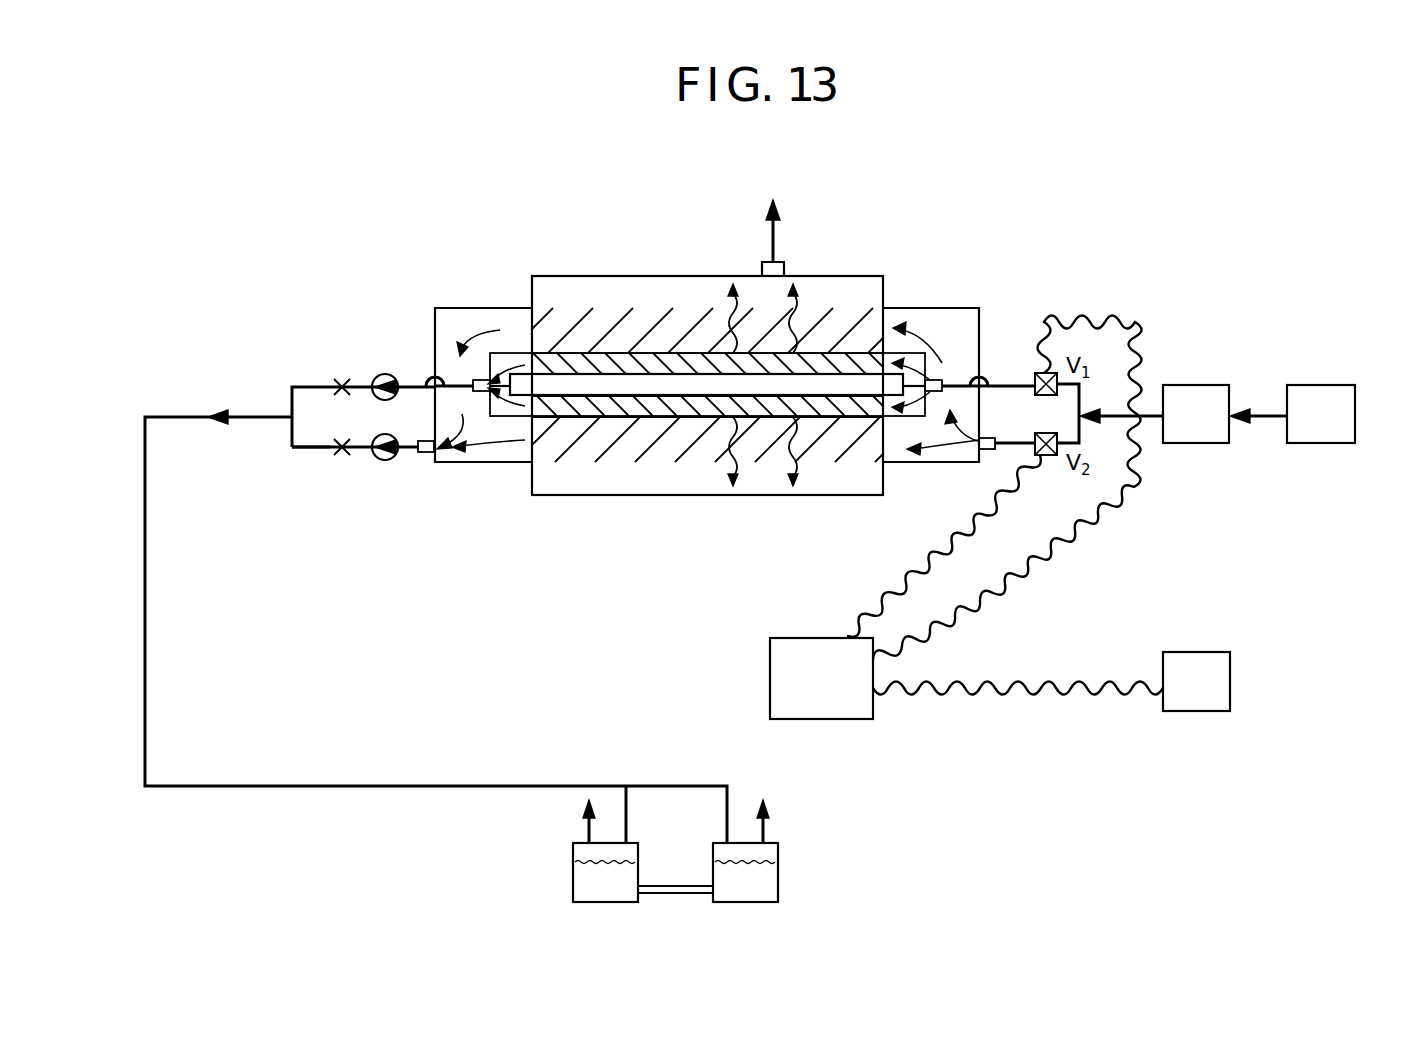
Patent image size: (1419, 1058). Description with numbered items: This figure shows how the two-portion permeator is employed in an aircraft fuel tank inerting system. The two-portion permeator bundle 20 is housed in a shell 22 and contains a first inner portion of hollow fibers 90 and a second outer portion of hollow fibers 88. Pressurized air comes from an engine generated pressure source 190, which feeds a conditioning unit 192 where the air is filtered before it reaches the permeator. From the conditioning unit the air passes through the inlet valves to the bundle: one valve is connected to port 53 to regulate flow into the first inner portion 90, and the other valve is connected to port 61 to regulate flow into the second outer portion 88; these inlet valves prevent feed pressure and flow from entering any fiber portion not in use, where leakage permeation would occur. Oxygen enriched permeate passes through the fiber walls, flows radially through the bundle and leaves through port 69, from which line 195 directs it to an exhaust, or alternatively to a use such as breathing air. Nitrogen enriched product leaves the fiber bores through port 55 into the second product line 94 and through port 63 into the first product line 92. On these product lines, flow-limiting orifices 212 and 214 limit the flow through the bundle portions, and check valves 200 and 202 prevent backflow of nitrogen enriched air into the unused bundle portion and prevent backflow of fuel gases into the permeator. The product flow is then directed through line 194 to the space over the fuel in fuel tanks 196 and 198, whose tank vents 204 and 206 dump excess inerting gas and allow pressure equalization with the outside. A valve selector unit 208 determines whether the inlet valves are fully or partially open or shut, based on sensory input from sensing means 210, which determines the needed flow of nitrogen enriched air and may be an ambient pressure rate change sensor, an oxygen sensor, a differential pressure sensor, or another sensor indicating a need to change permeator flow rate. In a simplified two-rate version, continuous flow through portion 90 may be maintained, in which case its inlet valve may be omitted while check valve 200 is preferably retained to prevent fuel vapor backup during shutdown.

The two-portion permeator bundle 20 is at (688, 463).
The shell 22 is at (607, 495).
The port 53 is at (933, 380).
The port 55 is at (479, 378).
The port 61 is at (990, 452).
The port 63 is at (428, 453).
The port 69 is at (762, 262).
The second outer portion of hollow fibers 88 is at (595, 322).
The first inner portion of hollow fibers 90 is at (668, 357).
The product 1 line 92 is at (305, 449).
The product 2 line 94 is at (305, 387).
The engine generated pressure source 190 is at (1322, 385).
The conditioning unit 192 is at (1193, 385).
The line 194 is at (145, 627).
The line 195 is at (775, 236).
The fuel tank 196 is at (600, 902).
The fuel tank 198 is at (752, 902).
The check valve 200 is at (390, 374).
The check valve 202 is at (386, 460).
The tank vent 204 is at (585, 832).
The tank vent 206 is at (768, 832).
The valve selector unit 208 is at (820, 638).
The sensing means 210 is at (1195, 652).
The flow-limiting orifice 212 is at (343, 385).
The flow-limiting orifice 214 is at (343, 450).